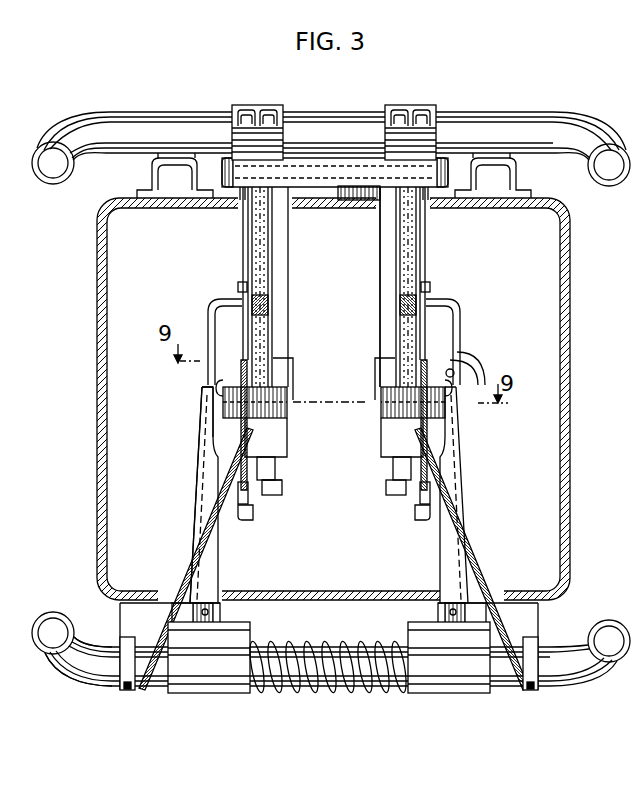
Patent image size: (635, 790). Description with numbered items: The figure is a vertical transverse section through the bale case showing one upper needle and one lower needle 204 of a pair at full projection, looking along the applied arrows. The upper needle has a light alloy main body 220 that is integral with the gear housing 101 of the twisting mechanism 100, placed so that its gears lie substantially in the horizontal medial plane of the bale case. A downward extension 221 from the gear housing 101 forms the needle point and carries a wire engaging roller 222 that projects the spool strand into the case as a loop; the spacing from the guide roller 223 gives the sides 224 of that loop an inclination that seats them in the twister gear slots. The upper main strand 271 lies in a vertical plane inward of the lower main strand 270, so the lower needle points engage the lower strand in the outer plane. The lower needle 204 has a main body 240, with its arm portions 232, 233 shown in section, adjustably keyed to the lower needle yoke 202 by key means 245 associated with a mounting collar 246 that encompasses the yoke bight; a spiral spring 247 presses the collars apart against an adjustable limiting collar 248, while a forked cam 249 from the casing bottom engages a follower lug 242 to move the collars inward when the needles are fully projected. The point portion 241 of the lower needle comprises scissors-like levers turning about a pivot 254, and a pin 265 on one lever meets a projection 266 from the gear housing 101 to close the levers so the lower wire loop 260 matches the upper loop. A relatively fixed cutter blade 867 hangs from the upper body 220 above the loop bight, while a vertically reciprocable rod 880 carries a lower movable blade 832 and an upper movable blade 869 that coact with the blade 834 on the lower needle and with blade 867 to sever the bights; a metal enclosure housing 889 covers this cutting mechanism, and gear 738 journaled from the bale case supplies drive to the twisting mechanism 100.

The twisting mechanism 100 is at (296, 441).
The gear housing 101 is at (296, 386).
The lower needle yoke 202 is at (78, 678).
The lower needle 204 is at (197, 525).
The main body of upper needle 220 is at (268, 267).
The downward extension 221 is at (276, 462).
The wire engaging roller 222 is at (245, 502).
The guide roller 223 is at (237, 193).
The sides of wire loop 224 is at (245, 268).
The tie rod 232 is at (205, 487).
The arm shoulder 233 is at (210, 460).
The main body of lower needle 240 is at (192, 552).
The point portion of lower needle 241 is at (226, 299).
The follower lug 242 is at (194, 618).
The key means 245 is at (176, 607).
The mounting collar 246 is at (217, 679).
The spiral spring 247 is at (311, 698).
The adjustable limiting collar 248 is at (127, 690).
The forked cam 249 is at (121, 663).
The pivot 254 is at (485, 383).
The lower wire loop 260 is at (382, 287).
The pin 265 is at (222, 405).
The projection 266 is at (216, 381).
The lower main strand 270 is at (218, 612).
The upper main strand 271 is at (243, 231).
The gear 738 is at (342, 201).
The lower movable blade 832 is at (405, 492).
The cutter blade 834 is at (236, 520).
The relatively fixed cutter blade 867 is at (268, 302).
The upper movable blade 869 is at (239, 286).
The vertically reciprocable rod 880 is at (283, 473).
The enclosure housing 889 is at (380, 333).